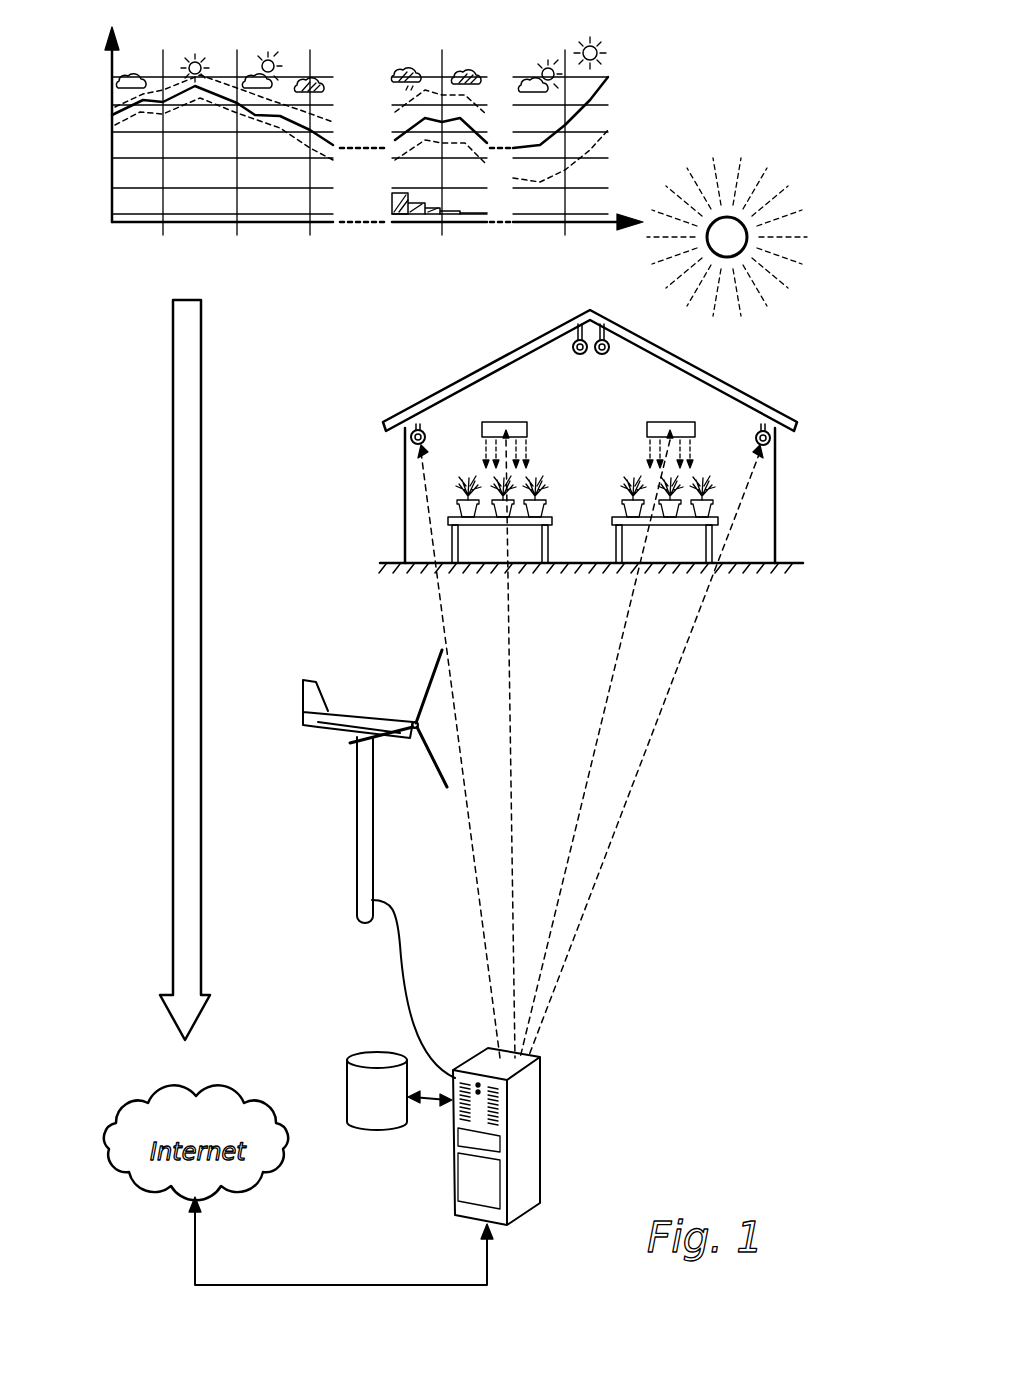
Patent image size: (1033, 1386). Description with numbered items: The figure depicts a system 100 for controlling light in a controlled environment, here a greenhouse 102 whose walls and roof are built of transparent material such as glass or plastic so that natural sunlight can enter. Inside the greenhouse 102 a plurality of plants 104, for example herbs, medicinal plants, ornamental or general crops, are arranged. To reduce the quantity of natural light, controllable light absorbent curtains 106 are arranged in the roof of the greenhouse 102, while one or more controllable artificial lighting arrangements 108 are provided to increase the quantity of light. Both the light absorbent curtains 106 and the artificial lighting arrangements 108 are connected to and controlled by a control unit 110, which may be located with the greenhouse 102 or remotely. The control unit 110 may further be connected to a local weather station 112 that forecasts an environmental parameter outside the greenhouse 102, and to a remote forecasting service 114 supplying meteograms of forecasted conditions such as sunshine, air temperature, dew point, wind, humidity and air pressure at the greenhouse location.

The system 100 is at (754, 975).
The greenhouse 102 is at (410, 501).
The plants 104 is at (640, 483).
The light absorbent curtains 106 is at (495, 382).
The artificial lighting arrangements 108 is at (680, 428).
The control unit 110 is at (483, 1062).
The local weather station 112 is at (347, 712).
The remote forecasting service 114 is at (652, 60).